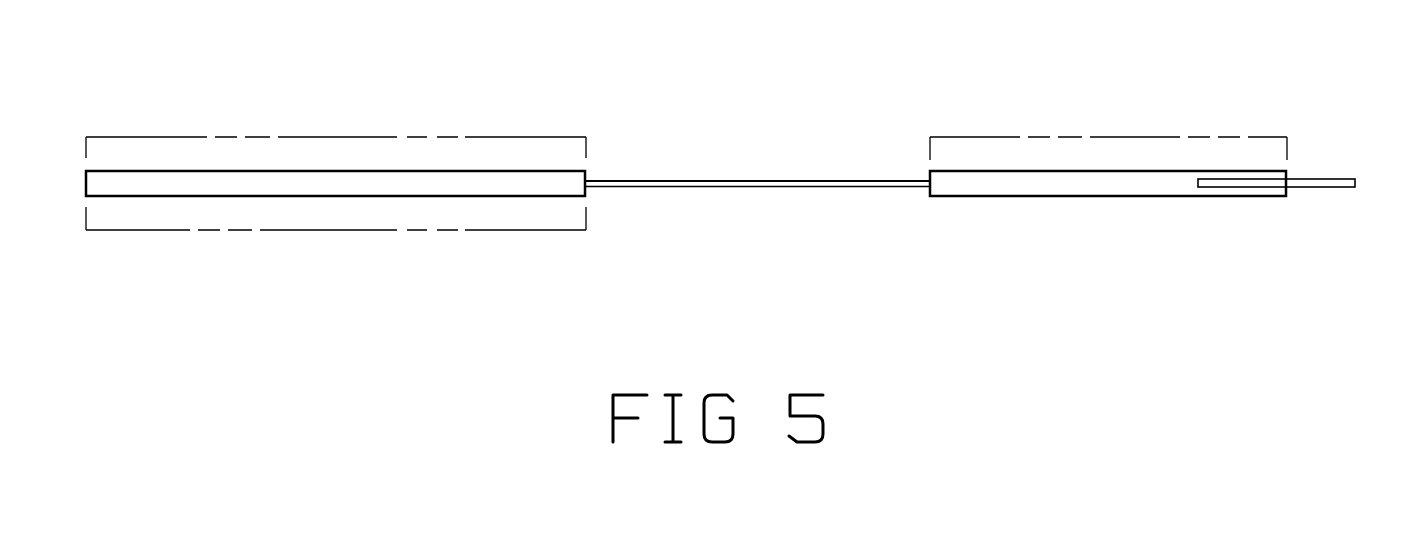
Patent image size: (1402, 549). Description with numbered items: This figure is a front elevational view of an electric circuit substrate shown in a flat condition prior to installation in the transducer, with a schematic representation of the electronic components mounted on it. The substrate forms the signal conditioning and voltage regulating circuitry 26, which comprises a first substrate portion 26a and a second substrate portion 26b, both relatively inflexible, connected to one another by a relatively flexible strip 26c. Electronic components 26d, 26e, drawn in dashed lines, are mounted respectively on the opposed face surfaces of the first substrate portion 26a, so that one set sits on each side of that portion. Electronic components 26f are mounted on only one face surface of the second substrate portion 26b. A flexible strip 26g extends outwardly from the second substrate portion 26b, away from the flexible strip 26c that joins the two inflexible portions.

The signal conditioning and voltage regulating circuitry 26 is at (360, 110).
The first substrate portion 26a is at (143, 182).
The second substrate portion 26b is at (1070, 185).
The relatively flexible strip 26c is at (682, 179).
The electronic components 26d is at (183, 215).
The electronic components 26e is at (472, 155).
The electronic components 26f is at (1217, 153).
The flexible strip 26g is at (1340, 182).